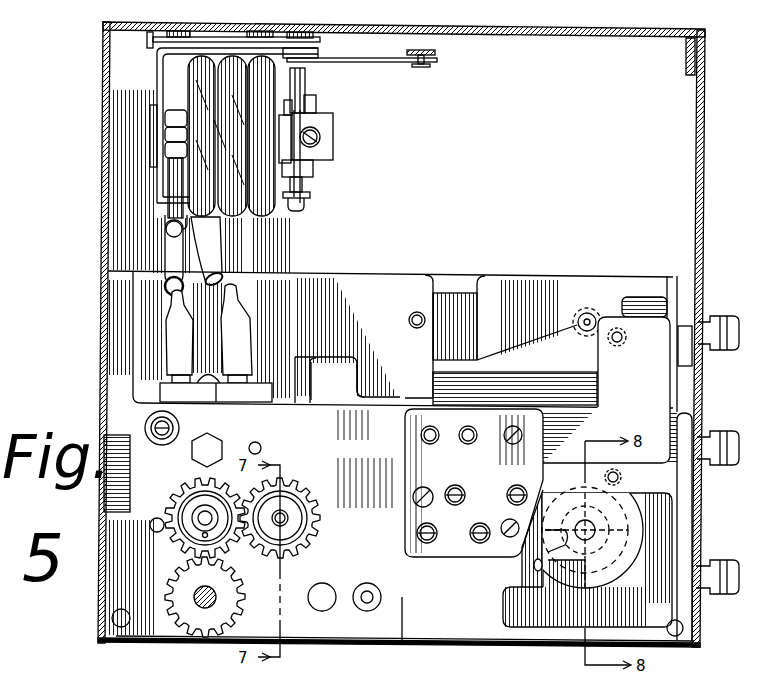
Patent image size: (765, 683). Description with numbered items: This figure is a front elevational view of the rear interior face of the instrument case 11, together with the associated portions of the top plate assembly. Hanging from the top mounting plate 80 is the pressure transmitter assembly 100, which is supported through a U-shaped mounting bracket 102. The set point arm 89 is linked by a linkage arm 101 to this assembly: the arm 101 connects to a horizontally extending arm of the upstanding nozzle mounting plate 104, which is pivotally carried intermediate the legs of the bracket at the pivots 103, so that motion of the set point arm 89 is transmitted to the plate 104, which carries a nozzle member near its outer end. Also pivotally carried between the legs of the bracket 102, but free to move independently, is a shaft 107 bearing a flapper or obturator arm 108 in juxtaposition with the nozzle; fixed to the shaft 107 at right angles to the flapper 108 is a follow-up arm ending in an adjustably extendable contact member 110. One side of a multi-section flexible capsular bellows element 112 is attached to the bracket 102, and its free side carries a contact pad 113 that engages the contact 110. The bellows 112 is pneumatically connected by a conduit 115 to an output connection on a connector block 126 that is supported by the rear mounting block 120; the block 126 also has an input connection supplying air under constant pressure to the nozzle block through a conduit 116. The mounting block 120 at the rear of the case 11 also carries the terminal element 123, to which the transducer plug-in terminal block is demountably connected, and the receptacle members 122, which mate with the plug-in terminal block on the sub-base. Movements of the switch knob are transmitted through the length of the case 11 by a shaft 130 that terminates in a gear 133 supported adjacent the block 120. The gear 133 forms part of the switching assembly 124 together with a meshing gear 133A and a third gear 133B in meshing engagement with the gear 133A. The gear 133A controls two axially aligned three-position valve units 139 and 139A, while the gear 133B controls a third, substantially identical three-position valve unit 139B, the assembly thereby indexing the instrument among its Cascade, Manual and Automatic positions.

The case 11 is at (702, 238).
The top mounting plate 80 is at (520, 45).
The set point arm 89 is at (434, 56).
The pressure transmitter assembly 100 is at (130, 132).
The linkage arm 101 is at (372, 64).
The U-shaped mounting bracket 102 is at (162, 73).
The pivot 103 is at (317, 54).
The nozzle mounting plate 104 is at (310, 103).
The shaft 107 is at (297, 108).
The flapper arm 108 is at (283, 85).
The contact member 110 is at (323, 142).
The bellows element 112 is at (193, 177).
The contact pad 113 is at (295, 150).
The conduit 115 is at (170, 248).
The conduit 116 is at (210, 262).
The rear mounting block 120 is at (478, 634).
The receptacle members 122 is at (367, 598).
The terminal element 123 is at (484, 475).
The switching assembly 124 is at (165, 554).
The connector block 126 is at (263, 393).
The shaft 130 is at (200, 607).
The gear 133 is at (215, 623).
The gear 133A is at (200, 481).
The gear 133B is at (283, 492).
The valve unit 139 is at (198, 510).
The valve unit 139A is at (193, 517).
The valve unit 139B is at (287, 521).